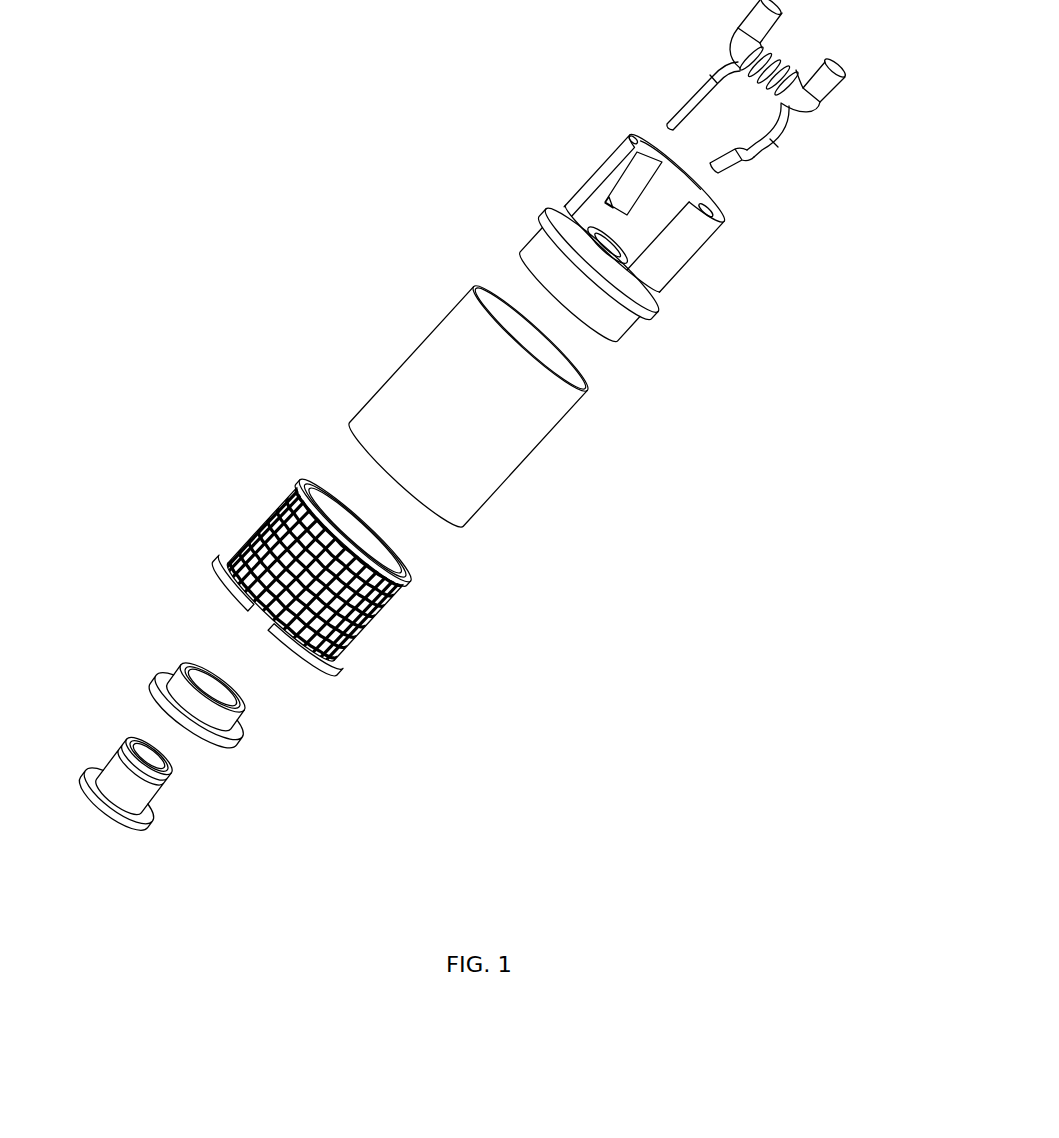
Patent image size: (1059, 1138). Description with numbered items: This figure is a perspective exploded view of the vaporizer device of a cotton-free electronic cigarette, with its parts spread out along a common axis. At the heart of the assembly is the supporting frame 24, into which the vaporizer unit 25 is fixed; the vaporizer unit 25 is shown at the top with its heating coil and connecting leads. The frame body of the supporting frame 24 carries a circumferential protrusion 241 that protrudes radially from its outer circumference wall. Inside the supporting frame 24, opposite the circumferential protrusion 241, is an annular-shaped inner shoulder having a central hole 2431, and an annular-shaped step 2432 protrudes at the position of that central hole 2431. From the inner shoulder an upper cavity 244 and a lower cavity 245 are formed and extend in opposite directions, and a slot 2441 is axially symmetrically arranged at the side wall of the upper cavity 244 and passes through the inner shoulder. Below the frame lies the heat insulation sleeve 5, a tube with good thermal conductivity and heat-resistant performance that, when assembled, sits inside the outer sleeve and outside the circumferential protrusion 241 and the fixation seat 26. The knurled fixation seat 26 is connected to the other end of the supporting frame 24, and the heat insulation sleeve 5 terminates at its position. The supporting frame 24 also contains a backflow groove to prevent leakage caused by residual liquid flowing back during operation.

The heat insulation sleeve 5 is at (420, 368).
The supporting frame 24 is at (651, 195).
The vaporizer unit 25 is at (740, 67).
The fixation seat 26 is at (257, 533).
The circumferential protrusion 241 is at (540, 222).
The upper cavity 244 is at (601, 175).
The lower cavity 245 is at (612, 330).
The central hole 2431 is at (608, 244).
The annular-shaped step 2432 is at (547, 186).
The slot 2441 is at (675, 245).